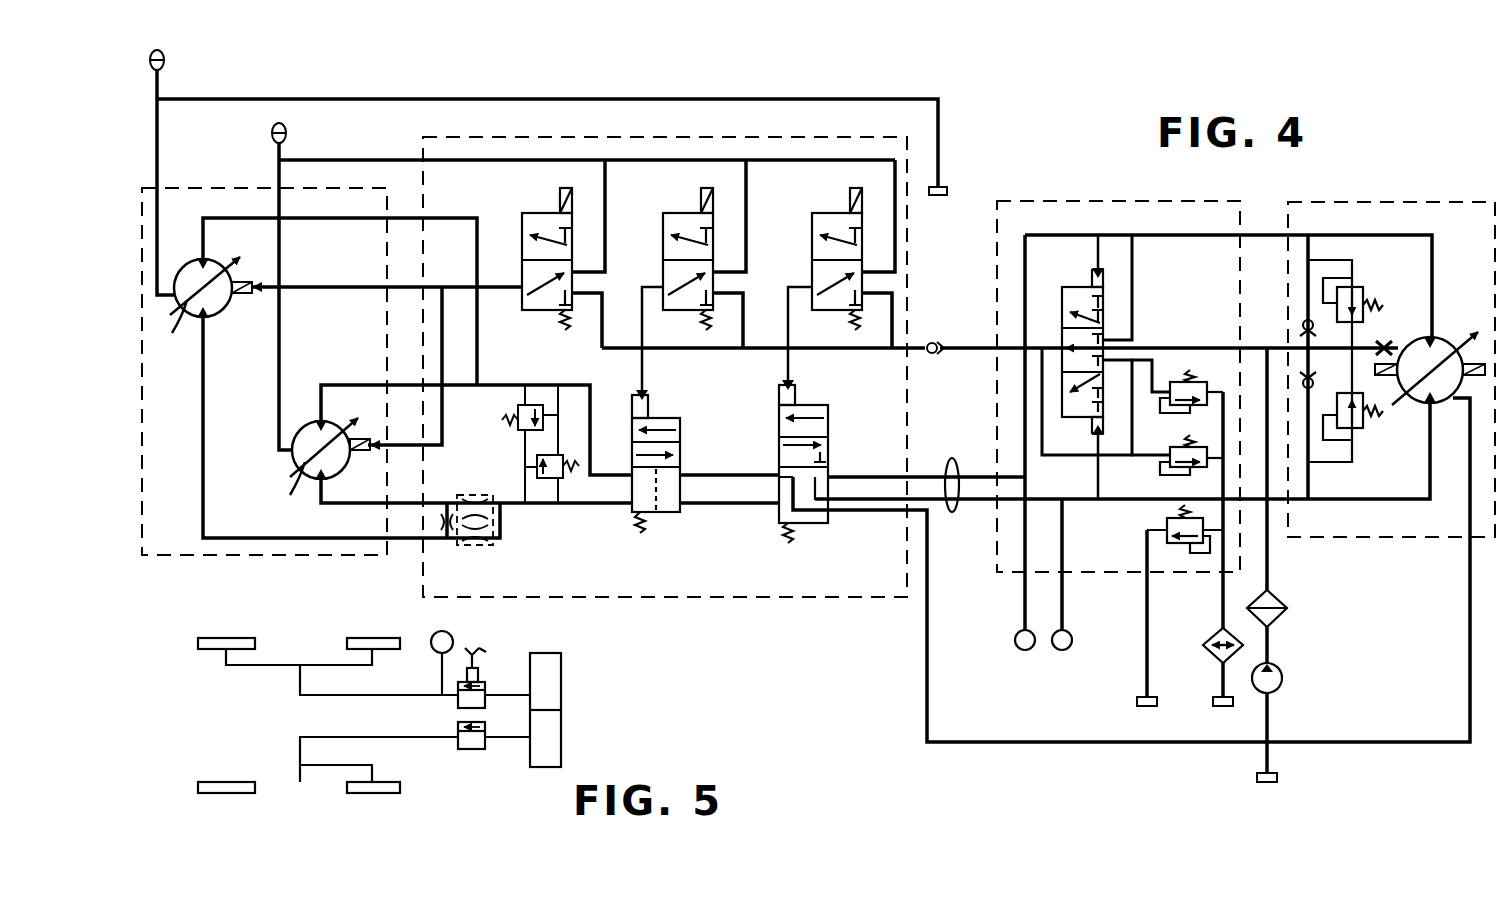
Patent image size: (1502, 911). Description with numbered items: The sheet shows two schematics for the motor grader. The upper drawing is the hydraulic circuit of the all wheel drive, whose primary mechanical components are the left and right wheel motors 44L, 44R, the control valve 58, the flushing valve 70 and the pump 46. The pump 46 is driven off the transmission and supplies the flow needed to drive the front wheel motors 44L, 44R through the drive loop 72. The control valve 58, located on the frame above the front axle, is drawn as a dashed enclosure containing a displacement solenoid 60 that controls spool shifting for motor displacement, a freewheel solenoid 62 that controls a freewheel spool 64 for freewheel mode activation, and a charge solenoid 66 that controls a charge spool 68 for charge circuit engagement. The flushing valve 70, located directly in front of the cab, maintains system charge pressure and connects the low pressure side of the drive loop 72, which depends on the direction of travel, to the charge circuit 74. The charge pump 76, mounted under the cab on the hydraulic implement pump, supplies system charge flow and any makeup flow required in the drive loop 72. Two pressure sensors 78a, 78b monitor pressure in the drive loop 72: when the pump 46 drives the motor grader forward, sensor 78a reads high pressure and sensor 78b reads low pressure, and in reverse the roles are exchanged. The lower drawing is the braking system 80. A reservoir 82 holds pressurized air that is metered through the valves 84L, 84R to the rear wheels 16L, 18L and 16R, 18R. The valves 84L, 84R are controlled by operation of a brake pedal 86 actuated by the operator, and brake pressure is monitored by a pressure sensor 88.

In FIG. 4, the right wheel motor 44R is at (206, 313).
In FIG. 4, the left wheel motor 44L is at (314, 470).
In FIG. 4, the pump 46 is at (1408, 198).
In FIG. 4, the control valve 58 is at (792, 598).
In FIG. 4, the displacement solenoid 60 is at (521, 210).
In FIG. 4, the freewheel solenoid 62 is at (678, 211).
In FIG. 4, the freewheel spool 64 is at (668, 513).
In FIG. 4, the charge solenoid 66 is at (825, 211).
In FIG. 4, the charge spool 68 is at (812, 524).
In FIG. 4, the flushing valve 70 is at (1143, 196).
In FIG. 4, the drive loop 72 is at (953, 458).
In FIG. 4, the charge circuit 74 is at (1302, 598).
In FIG. 4, the charge pump 76 is at (1283, 682).
In FIG. 4, the pressure sensor 78a is at (1016, 648).
In FIG. 4, the pressure sensor 78b is at (1062, 650).
In FIG. 5, the left rear wheel 18L is at (205, 637).
In FIG. 5, the left rear wheel 16L is at (360, 638).
In FIG. 5, the right rear wheel 18R is at (213, 795).
In FIG. 5, the right rear wheel 16R is at (362, 795).
In FIG. 5, the pressure sensor 88 is at (433, 633).
In FIG. 5, the brake pedal 86 is at (478, 647).
In FIG. 5, the valve 84L is at (487, 682).
In FIG. 5, the valve 84R is at (478, 750).
In FIG. 5, the reservoir 82 is at (558, 655).
In FIG. 5, the braking system 80 is at (602, 691).